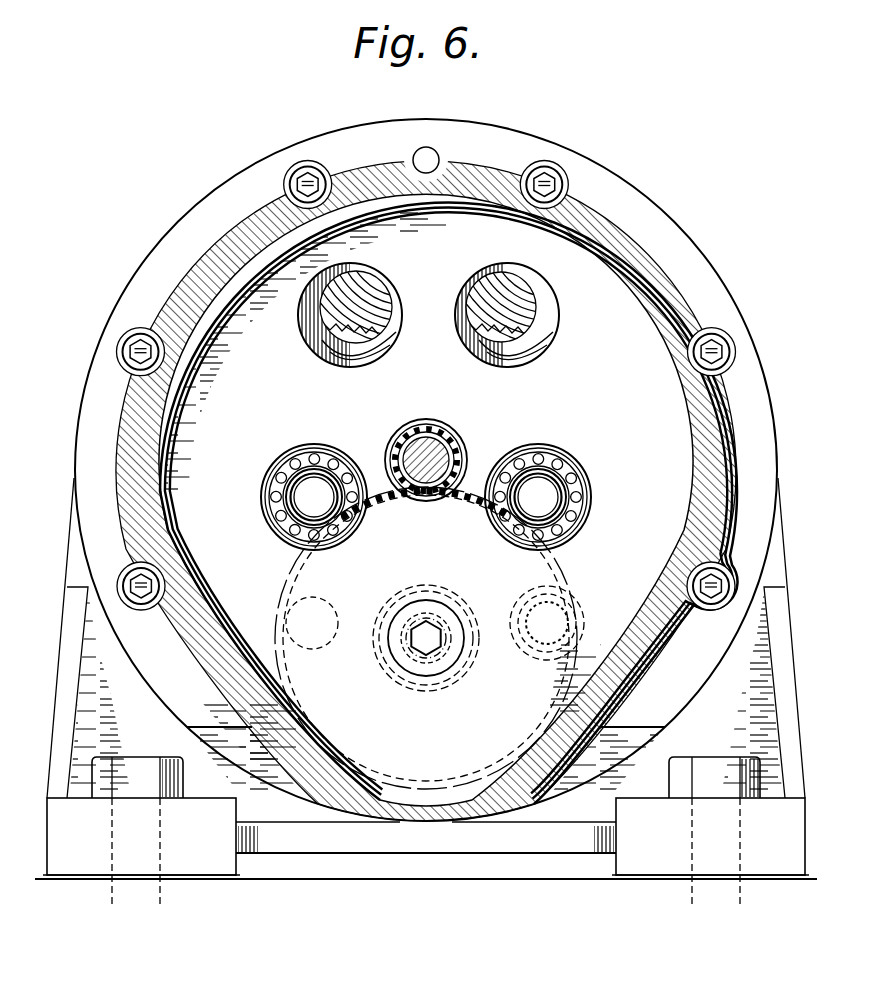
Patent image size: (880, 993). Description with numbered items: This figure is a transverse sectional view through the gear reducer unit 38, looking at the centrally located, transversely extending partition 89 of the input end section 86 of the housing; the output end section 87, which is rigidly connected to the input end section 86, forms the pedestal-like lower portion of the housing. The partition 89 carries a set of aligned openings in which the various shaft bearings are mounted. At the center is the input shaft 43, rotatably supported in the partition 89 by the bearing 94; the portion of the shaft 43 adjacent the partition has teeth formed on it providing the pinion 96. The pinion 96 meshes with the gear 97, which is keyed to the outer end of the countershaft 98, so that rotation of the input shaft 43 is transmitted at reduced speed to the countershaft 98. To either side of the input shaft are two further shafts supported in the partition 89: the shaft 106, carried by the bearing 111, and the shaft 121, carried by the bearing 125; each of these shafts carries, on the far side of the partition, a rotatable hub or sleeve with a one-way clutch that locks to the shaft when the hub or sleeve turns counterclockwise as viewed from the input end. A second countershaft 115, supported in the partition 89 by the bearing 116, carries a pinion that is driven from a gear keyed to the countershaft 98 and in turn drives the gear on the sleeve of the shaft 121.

The gear reducer unit 38 is at (612, 170).
The input end section 86 is at (627, 233).
The partition 89 is at (638, 347).
The bearing 94 is at (426, 438).
The input shaft 43 is at (398, 443).
The pinion 96 is at (453, 442).
The bearing 111 is at (280, 464).
The shaft 106 is at (306, 500).
The bearing 125 is at (568, 464).
The shaft 121 is at (548, 502).
The output end section 87 is at (769, 547).
The gear 97 is at (558, 561).
The countershaft 98 is at (430, 618).
The countershaft 115 is at (568, 589).
The bearing 116 is at (585, 630).